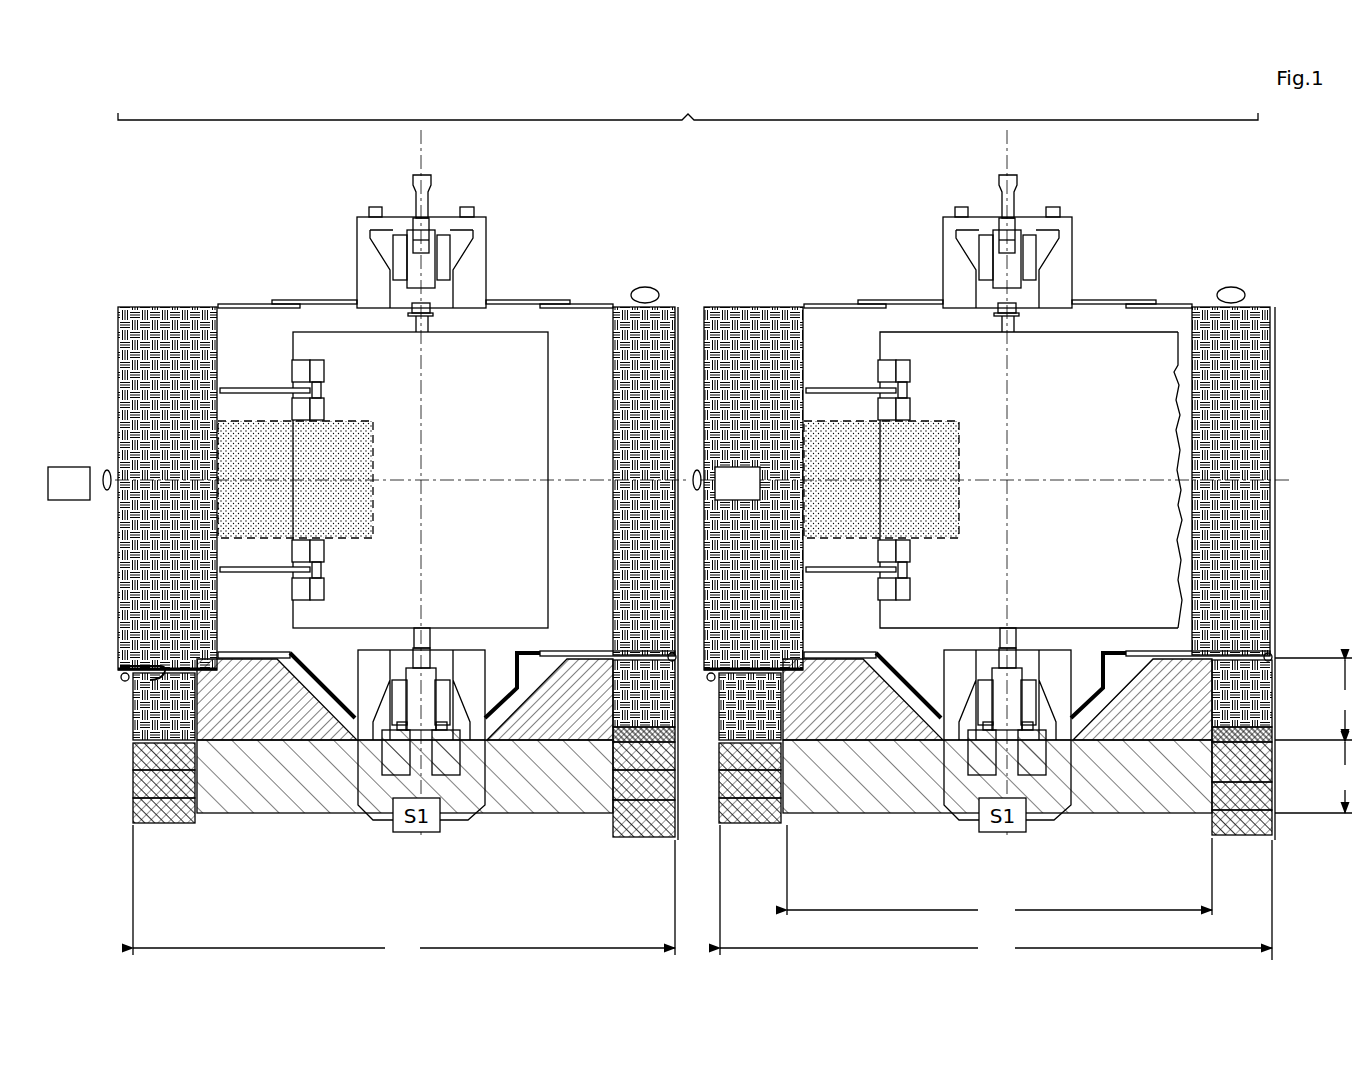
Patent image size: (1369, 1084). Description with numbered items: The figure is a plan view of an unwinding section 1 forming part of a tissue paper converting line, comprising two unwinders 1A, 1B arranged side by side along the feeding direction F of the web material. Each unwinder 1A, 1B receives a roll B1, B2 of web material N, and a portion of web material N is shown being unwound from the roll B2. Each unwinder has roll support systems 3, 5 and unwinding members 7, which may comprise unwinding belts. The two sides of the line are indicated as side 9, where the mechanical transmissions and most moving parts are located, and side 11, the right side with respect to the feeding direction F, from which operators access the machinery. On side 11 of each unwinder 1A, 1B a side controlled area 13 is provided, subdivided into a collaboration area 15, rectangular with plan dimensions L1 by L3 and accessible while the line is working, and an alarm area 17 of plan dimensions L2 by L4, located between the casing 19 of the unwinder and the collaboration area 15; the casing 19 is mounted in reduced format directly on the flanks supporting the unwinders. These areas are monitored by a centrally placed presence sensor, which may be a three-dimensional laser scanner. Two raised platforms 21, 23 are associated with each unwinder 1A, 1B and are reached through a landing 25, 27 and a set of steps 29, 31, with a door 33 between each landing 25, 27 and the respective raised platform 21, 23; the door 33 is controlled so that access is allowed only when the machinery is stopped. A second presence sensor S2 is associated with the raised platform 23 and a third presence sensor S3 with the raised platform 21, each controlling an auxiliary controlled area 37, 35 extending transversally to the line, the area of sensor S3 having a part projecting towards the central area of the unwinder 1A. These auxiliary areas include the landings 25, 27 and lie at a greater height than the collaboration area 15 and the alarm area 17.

The unwinding section 1 is at (688, 103).
The unwinder 1A is at (297, 228).
The unwinder 1B is at (879, 228).
The roll support system 3 is at (495, 240).
The roll support system 5 is at (500, 648).
The unwinding members 7 is at (325, 378).
The side of the line 9 is at (205, 287).
The side of the line 11 is at (283, 820).
The side controlled area 13 is at (570, 793).
The collaboration area 15 is at (315, 780).
The alarm area 17 is at (235, 735).
The casing 19 is at (320, 680).
The raised platform 21 is at (145, 335).
The raised platform 23 is at (630, 350).
The landing 25 is at (148, 690).
The landing 27 is at (650, 698).
The set of steps 29 is at (148, 792).
The set of steps 31 is at (650, 822).
The door 33 is at (150, 668).
The auxiliary controlled area 35 is at (360, 430).
The auxiliary controlled area 37 is at (1278, 380).
The roll B1 is at (488, 408).
The roll B2 is at (1031, 433).
The web material N is at (1175, 365).
The second presence sensor S2 is at (643, 286).
The third presence sensor S3 is at (404, 483).
The feeding direction F is at (1285, 480).
The plan dimension of collaboration area L1 is at (702, 892).
The plan dimension of alarm area L2 is at (999, 873).
The plan dimension of collaboration area L3 is at (1316, 777).
The plan dimension of alarm area L4 is at (1316, 699).